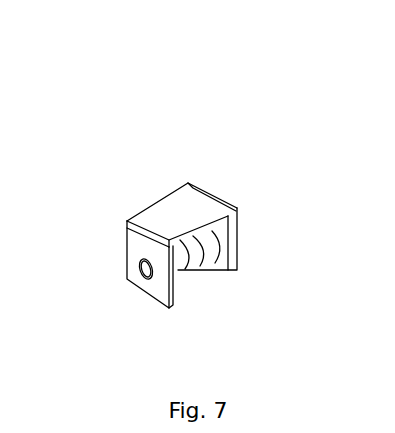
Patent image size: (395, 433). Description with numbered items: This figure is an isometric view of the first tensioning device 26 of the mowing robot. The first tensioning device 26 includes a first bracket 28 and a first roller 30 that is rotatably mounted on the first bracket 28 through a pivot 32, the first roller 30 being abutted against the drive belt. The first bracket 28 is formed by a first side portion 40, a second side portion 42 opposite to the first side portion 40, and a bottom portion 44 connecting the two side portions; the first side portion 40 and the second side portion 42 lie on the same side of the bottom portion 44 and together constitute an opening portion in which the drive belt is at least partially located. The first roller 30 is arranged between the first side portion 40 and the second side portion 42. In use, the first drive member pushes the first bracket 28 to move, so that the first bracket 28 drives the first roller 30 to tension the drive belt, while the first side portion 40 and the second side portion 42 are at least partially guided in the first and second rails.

The first tensioning device 26 is at (203, 53).
The first bracket 28 is at (203, 190).
The bottom portion 44 is at (172, 208).
The first side portion 40 is at (129, 254).
The pivot 32 is at (138, 267).
The second side portion 42 is at (237, 230).
The first roller 30 is at (200, 258).